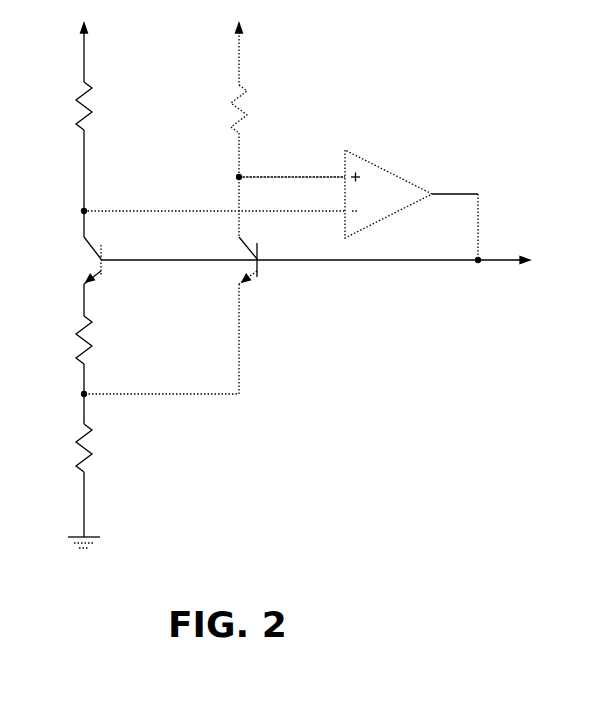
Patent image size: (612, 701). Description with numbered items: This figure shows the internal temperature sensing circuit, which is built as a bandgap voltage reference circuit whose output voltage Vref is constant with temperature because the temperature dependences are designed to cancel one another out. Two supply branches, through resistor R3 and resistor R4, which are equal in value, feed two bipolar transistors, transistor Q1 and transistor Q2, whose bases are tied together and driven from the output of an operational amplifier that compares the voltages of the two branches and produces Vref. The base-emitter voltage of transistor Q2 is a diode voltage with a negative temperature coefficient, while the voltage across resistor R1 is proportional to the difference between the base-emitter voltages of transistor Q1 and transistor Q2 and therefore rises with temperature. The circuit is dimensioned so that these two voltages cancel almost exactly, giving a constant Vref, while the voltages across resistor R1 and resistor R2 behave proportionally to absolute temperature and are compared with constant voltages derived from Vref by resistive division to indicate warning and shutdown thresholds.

The resistor R1 is at (68, 448).
The resistor R2 is at (68, 340).
The resistor R3 is at (108, 106).
The resistor R4 is at (203, 109).
The transistor Q1 is at (78, 265).
The transistor Q2 is at (230, 264).
The output voltage Vref is at (315, 249).